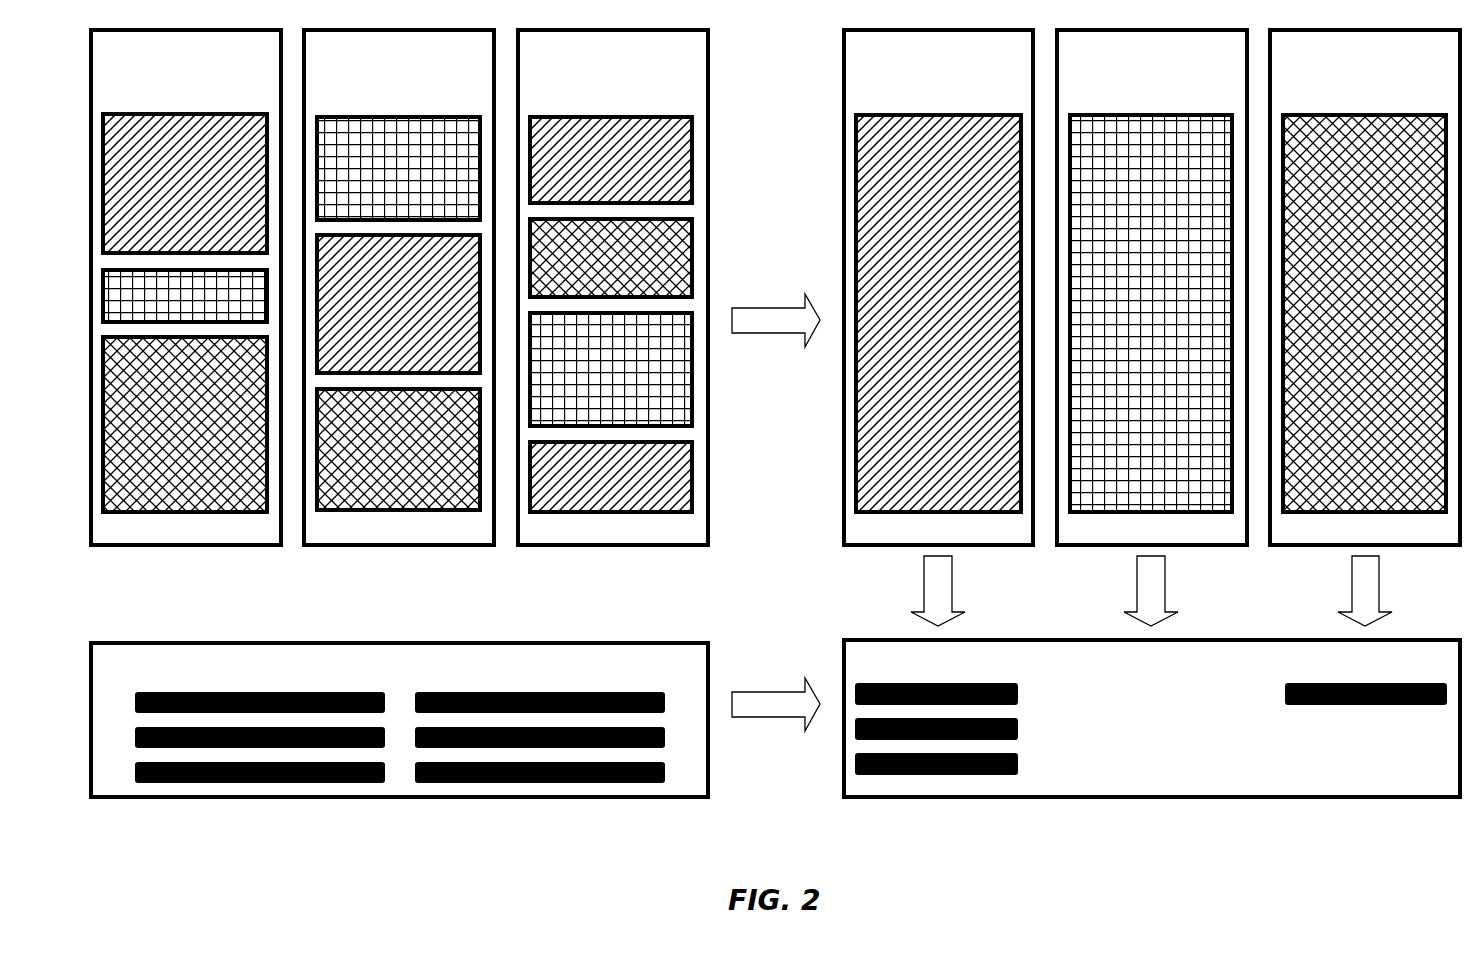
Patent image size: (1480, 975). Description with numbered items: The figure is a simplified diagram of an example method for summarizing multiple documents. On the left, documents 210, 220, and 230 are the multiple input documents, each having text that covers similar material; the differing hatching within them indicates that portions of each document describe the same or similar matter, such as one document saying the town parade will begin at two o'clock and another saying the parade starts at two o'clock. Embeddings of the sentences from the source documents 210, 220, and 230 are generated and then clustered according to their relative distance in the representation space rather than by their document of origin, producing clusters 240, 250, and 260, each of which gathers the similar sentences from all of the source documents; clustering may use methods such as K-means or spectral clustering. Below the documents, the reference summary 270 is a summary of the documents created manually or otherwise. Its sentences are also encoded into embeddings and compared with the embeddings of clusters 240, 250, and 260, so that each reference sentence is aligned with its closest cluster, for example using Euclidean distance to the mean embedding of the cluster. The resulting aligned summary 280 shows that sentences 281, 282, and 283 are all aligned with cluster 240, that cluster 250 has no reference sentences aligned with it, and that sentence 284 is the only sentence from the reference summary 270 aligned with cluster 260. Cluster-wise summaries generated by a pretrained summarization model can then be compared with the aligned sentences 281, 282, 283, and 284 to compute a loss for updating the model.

The document 210 is at (266, 69).
The document 220 is at (480, 69).
The document 230 is at (693, 69).
The cluster 240 is at (1003, 69).
The cluster 250 is at (1216, 69).
The cluster 260 is at (1430, 69).
The reference summary 270 is at (530, 679).
The aligned summary 280 is at (1269, 679).
The sentence 281 is at (1018, 696).
The sentence 282 is at (1018, 731).
The sentence 283 is at (1018, 766).
The sentence 284 is at (1365, 707).